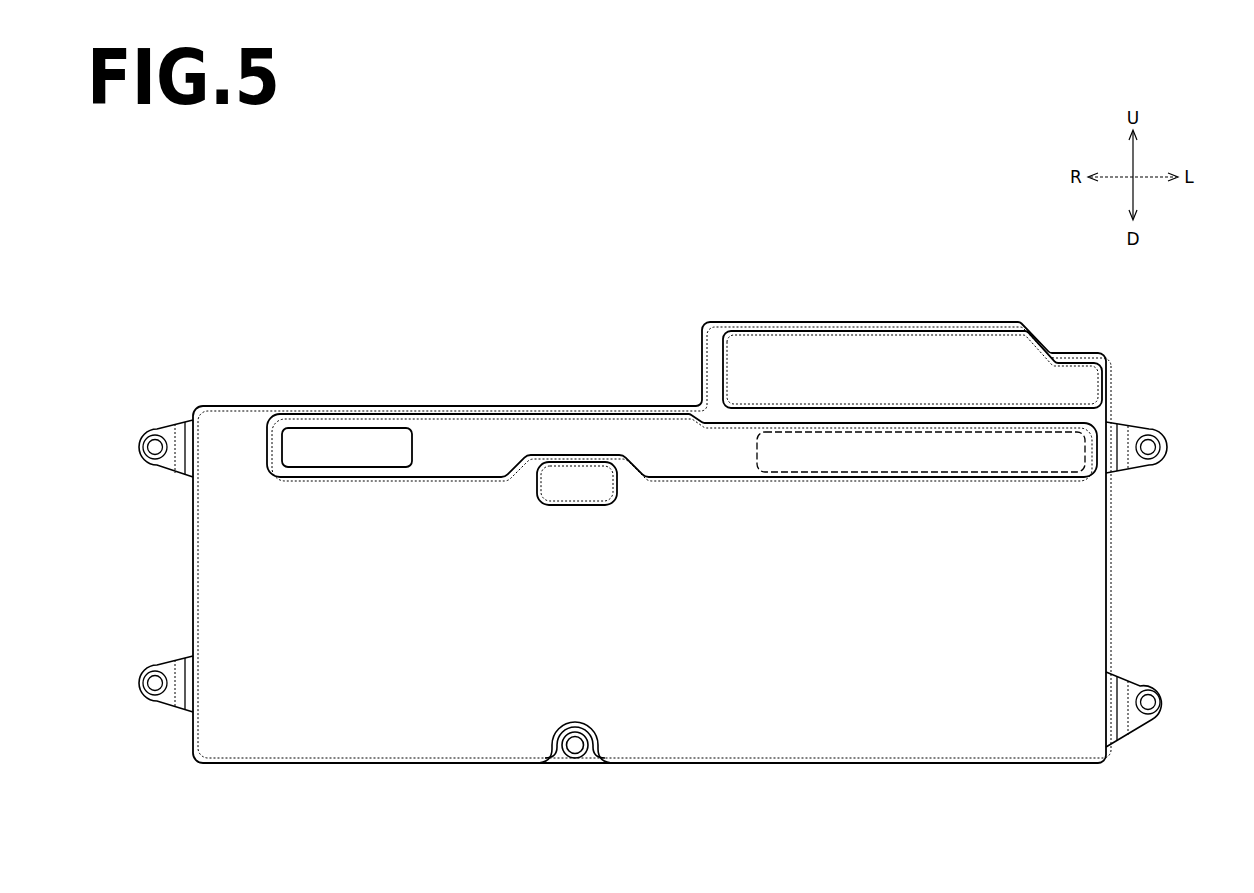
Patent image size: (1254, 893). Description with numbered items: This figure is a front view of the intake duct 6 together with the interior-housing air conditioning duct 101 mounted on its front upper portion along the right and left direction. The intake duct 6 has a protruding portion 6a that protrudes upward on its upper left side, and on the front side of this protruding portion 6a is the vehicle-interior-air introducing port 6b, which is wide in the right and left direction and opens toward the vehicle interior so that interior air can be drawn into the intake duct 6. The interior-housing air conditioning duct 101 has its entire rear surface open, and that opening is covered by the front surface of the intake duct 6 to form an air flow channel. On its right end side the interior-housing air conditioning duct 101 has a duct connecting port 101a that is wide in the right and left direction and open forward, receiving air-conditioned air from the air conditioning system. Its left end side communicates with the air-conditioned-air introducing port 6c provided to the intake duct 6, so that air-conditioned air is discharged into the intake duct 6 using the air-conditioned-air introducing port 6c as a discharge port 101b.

The intake duct 6 is at (1108, 577).
The protruding portion 6a is at (1029, 320).
The vehicle-interior-air introducing port 6b is at (730, 365).
The air-conditioned-air introducing port 6c is at (1043, 446).
The interior-housing air conditioning duct 101 is at (470, 447).
The duct connecting port 101a is at (284, 447).
The discharge port 101b is at (1001, 429).